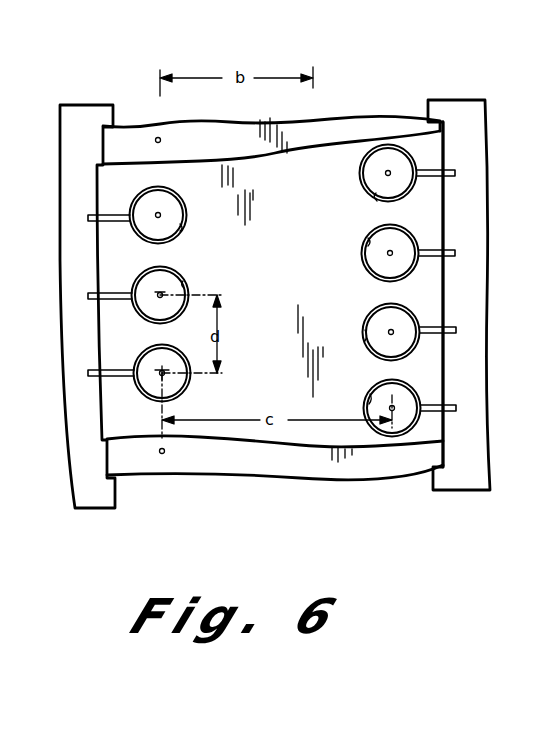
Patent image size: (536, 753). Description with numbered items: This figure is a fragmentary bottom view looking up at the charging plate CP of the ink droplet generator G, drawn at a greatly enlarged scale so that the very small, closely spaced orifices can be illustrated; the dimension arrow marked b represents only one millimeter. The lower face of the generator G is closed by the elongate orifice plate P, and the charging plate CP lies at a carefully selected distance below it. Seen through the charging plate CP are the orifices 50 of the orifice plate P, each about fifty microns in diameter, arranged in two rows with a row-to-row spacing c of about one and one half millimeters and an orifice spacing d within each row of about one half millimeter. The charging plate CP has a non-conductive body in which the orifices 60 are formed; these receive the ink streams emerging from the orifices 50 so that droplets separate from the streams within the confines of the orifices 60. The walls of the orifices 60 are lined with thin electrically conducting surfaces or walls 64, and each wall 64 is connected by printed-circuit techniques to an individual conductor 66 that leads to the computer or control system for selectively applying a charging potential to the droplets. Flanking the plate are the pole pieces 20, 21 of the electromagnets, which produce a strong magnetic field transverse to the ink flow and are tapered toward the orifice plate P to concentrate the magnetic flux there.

The pole piece 20 is at (90, 112).
The pole piece 21 is at (467, 110).
The orifices 50 is at (160, 138).
The orifices 60 is at (181, 229).
The electrically conducting walls 64 is at (137, 234).
The individual conductors 66 is at (90, 215).
The ink droplet generator G is at (419, 64).
The orifice plate P is at (350, 120).
The charging plate CP is at (440, 212).